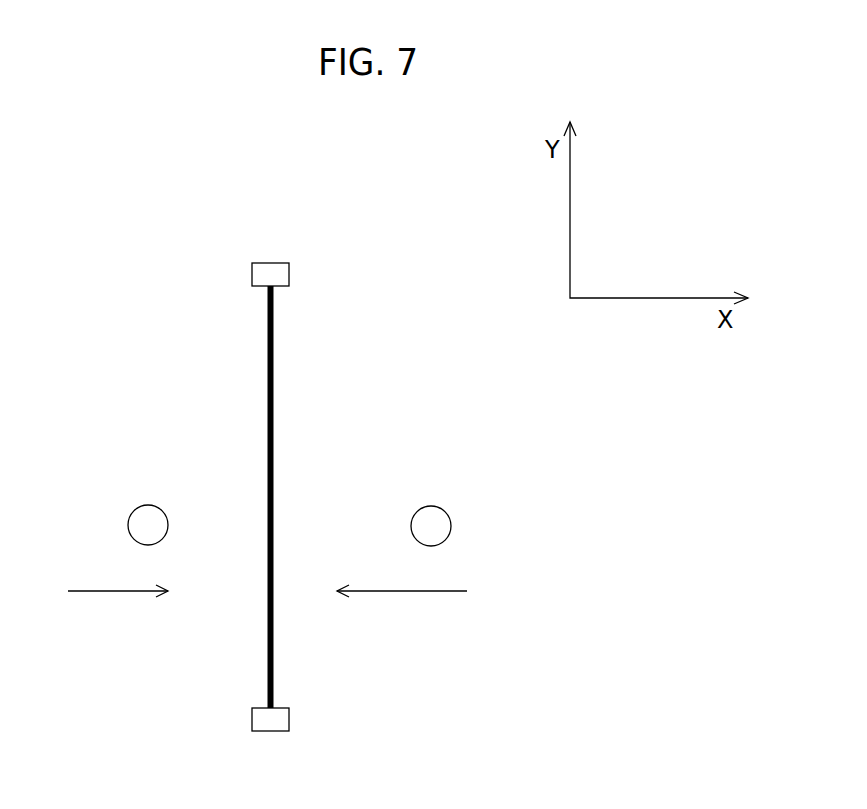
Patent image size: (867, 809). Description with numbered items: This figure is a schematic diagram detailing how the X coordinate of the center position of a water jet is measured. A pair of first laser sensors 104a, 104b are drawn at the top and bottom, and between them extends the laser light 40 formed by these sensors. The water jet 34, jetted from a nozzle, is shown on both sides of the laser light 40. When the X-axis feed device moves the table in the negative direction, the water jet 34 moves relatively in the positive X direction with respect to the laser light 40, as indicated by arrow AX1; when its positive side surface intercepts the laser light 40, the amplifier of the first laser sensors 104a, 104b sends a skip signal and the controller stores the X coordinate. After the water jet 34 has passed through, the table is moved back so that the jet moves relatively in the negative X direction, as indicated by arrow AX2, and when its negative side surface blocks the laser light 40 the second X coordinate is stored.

The laser light 40 is at (271, 388).
The first laser sensor 104a is at (279, 273).
The first laser sensor 104b is at (279, 718).
The water jet 34 is at (143, 526).
The arrow AX1 is at (112, 593).
The arrow AX2 is at (415, 593).